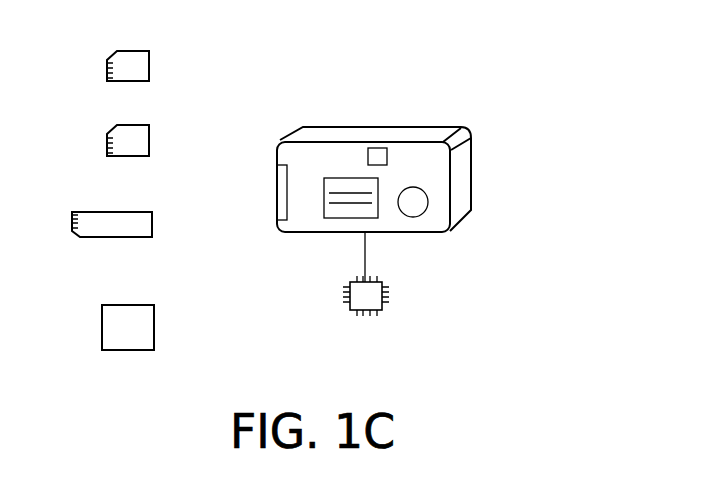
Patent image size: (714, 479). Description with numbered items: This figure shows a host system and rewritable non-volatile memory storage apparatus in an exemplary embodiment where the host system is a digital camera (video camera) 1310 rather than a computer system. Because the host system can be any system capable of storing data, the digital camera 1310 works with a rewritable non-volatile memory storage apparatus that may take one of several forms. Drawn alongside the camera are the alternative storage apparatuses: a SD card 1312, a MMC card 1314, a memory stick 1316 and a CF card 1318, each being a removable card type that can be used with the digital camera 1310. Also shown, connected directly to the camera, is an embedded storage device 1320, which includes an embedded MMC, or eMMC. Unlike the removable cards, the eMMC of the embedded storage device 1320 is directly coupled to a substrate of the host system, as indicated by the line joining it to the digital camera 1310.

The digital camera 1310 is at (472, 167).
The SD card 1312 is at (149, 56).
The MMC card 1314 is at (149, 131).
The memory stick 1316 is at (152, 225).
The CF card 1318 is at (154, 320).
The embedded storage device 1320 is at (386, 297).